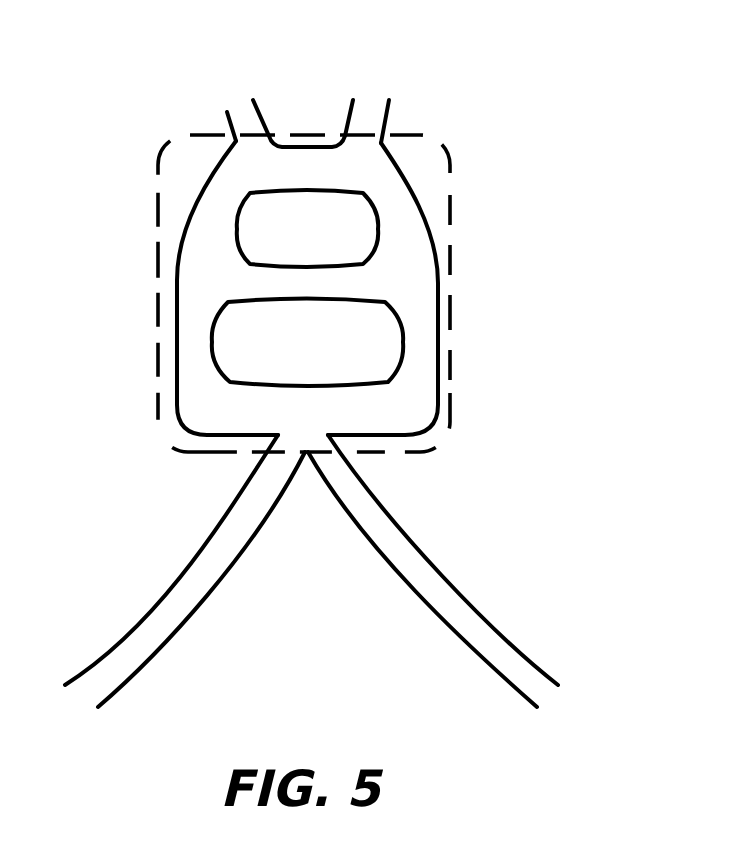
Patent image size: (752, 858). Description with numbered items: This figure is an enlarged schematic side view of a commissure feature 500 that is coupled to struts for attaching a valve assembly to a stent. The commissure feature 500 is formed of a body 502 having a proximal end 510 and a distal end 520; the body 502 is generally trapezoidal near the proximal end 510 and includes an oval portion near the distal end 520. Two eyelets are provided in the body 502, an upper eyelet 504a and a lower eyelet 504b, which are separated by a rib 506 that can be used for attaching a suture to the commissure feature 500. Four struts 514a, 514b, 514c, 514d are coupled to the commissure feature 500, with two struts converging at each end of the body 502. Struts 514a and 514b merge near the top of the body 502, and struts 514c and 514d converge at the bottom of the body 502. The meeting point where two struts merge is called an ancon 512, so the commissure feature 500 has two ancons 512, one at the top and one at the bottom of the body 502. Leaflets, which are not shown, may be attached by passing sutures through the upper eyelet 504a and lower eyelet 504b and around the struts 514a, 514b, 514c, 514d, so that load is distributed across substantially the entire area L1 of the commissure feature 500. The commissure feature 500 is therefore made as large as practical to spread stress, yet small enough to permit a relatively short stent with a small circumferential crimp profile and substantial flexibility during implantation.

The commissure feature 500 is at (335, 367).
The body 502 is at (420, 412).
The upper eyelet 504a is at (277, 228).
The lower eyelet 504b is at (280, 330).
The rib 506 is at (343, 288).
The proximal end 510 is at (174, 427).
The ancon 512 is at (310, 142).
The strut 514a is at (235, 127).
The strut 514b is at (378, 110).
The strut 514c is at (172, 608).
The strut 514d is at (490, 645).
The distal end 520 is at (414, 69).
The area L1 is at (450, 214).